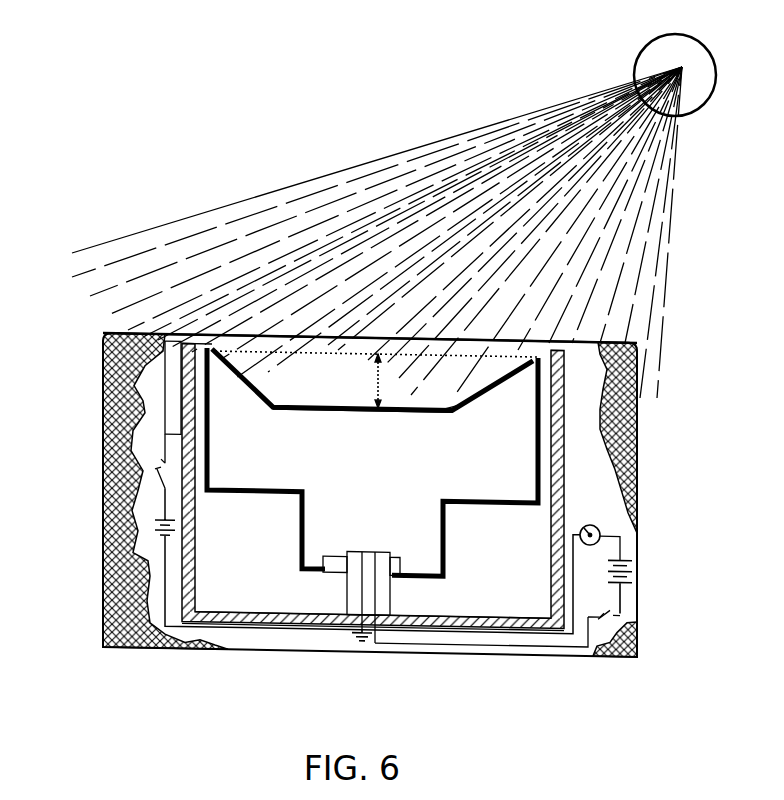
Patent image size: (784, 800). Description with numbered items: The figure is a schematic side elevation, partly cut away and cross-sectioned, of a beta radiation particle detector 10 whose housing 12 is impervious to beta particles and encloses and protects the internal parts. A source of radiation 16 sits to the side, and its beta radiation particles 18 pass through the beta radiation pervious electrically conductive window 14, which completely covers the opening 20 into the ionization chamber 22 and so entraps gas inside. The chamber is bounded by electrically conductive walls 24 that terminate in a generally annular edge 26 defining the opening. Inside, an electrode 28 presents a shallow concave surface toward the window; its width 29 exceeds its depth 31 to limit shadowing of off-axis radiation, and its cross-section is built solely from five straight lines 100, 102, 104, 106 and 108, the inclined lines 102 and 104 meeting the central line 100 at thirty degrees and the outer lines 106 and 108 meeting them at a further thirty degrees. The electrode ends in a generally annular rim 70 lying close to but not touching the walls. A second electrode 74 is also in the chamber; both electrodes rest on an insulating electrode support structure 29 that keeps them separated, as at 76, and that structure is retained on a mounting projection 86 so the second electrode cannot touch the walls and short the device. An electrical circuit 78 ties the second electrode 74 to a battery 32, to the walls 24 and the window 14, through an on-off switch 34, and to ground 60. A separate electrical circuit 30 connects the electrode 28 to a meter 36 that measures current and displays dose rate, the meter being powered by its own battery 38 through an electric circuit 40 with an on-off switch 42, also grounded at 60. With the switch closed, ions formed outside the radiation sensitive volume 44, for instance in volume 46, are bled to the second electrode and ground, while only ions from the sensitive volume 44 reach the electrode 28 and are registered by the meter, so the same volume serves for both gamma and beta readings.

The beta radiation particle detector 10 is at (66, 422).
The housing 12 is at (103, 590).
The beta radiation pervious electrically conductive window 14 is at (332, 343).
The source of radiation 16 is at (657, 60).
The beta radiation particles 18 is at (398, 147).
The opening 20 is at (378, 349).
The ionization chamber 22 is at (365, 372).
The electrically conductive walls 24 is at (198, 603).
The generally annular edge 26 is at (205, 335).
The electrode 28 is at (385, 410).
The electrode support structure 29 is at (437, 345).
The electrical circuit 30 is at (546, 624).
The depth 31 is at (390, 372).
The battery 32 is at (155, 524).
The on-off switch 34 is at (155, 476).
The meter 36 is at (626, 528).
The battery 38 is at (630, 562).
The electric circuit 40 is at (622, 596).
The on-off switch 42 is at (612, 607).
The radiation sensitive volume 44 is at (319, 394).
The volume 46 is at (256, 577).
The electrical ground 60 is at (355, 640).
The generally annular rim 70 is at (227, 355).
The second electrode 74 is at (303, 538).
The separation 76 is at (221, 343).
The electrical circuit 78 is at (166, 383).
The electrode support structure mounting projection 86 is at (378, 648).
The straight line 100 is at (314, 408).
The straight line 102 is at (452, 413).
The straight line 104 is at (239, 378).
The straight line 106 is at (221, 395).
The straight line 108 is at (495, 408).